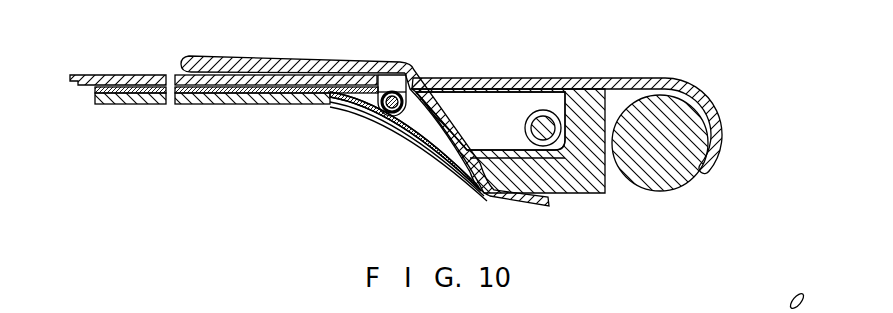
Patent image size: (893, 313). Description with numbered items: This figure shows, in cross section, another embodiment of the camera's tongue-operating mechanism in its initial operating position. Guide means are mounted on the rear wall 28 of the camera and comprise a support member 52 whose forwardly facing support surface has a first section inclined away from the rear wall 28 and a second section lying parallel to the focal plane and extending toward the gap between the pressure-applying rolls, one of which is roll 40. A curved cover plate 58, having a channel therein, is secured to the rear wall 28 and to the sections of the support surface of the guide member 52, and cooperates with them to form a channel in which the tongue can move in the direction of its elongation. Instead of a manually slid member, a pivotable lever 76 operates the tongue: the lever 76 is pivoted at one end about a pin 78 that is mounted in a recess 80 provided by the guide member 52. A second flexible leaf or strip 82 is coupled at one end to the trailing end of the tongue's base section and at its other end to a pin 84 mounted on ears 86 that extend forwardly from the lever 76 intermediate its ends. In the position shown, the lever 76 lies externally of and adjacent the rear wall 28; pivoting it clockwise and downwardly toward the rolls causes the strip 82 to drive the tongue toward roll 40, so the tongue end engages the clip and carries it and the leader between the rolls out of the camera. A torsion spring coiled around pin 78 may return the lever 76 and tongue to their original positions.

The rear wall 28 is at (183, 70).
The roll 40 is at (683, 168).
The support member 52 is at (567, 182).
The curved cover plate 58 is at (352, 104).
The pivotable lever 76 is at (398, 63).
The pin 78 is at (548, 110).
The recess 80 is at (503, 110).
The second flexible leaf or strip 82 is at (360, 88).
The pin 84 is at (380, 73).
The ears 86 is at (401, 82).